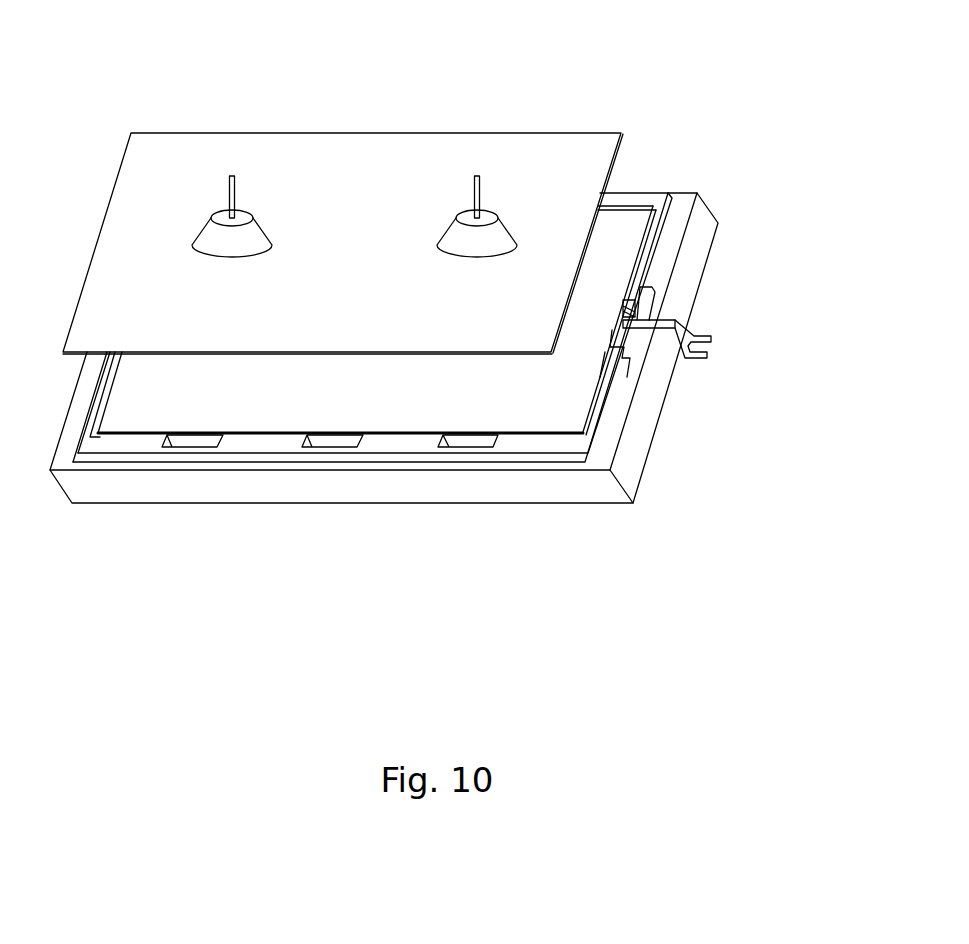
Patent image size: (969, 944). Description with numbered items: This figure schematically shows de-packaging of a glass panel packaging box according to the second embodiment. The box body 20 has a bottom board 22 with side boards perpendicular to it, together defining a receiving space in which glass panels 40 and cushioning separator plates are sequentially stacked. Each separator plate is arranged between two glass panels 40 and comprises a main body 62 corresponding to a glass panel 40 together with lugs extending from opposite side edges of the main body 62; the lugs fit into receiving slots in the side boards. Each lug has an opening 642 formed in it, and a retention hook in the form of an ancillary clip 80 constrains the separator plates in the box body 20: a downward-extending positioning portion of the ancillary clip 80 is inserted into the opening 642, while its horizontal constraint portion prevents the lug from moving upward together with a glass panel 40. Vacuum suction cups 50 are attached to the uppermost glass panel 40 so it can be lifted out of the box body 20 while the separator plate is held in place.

The box body 20 is at (438, 485).
The bottom board 22 is at (668, 398).
The glass panel 40 is at (517, 160).
The vacuum suction cup 50 is at (248, 233).
The main body 62 is at (623, 230).
The opening 642 is at (628, 300).
The ancillary clip 80 is at (718, 318).